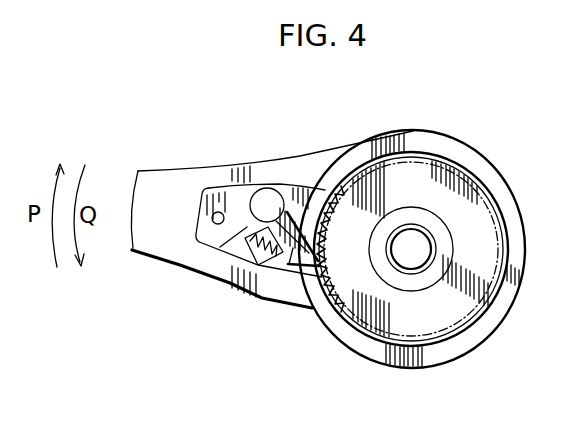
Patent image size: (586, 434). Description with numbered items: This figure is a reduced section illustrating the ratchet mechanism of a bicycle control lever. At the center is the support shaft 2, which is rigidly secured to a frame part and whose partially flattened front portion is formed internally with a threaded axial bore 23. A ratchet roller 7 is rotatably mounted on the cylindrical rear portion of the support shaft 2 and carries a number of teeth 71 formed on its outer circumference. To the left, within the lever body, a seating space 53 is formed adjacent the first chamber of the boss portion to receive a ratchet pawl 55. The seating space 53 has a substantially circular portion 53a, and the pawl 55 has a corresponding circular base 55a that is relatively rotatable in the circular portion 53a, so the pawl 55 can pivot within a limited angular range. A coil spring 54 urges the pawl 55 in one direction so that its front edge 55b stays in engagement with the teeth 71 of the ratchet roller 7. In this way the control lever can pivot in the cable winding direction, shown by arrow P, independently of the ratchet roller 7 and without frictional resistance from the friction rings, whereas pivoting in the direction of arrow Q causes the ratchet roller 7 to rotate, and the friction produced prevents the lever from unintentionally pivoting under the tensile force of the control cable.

The support shaft 2 is at (443, 247).
The ratchet roller 7 is at (467, 213).
The threaded axial bore 23 is at (417, 257).
The seating space 53 is at (289, 186).
The circular portion 53a is at (247, 227).
The coil spring 54 is at (237, 262).
The ratchet pawl 55 is at (286, 262).
The circular base 55a is at (256, 193).
The front edge 55b is at (311, 268).
The teeth 71 is at (331, 196).